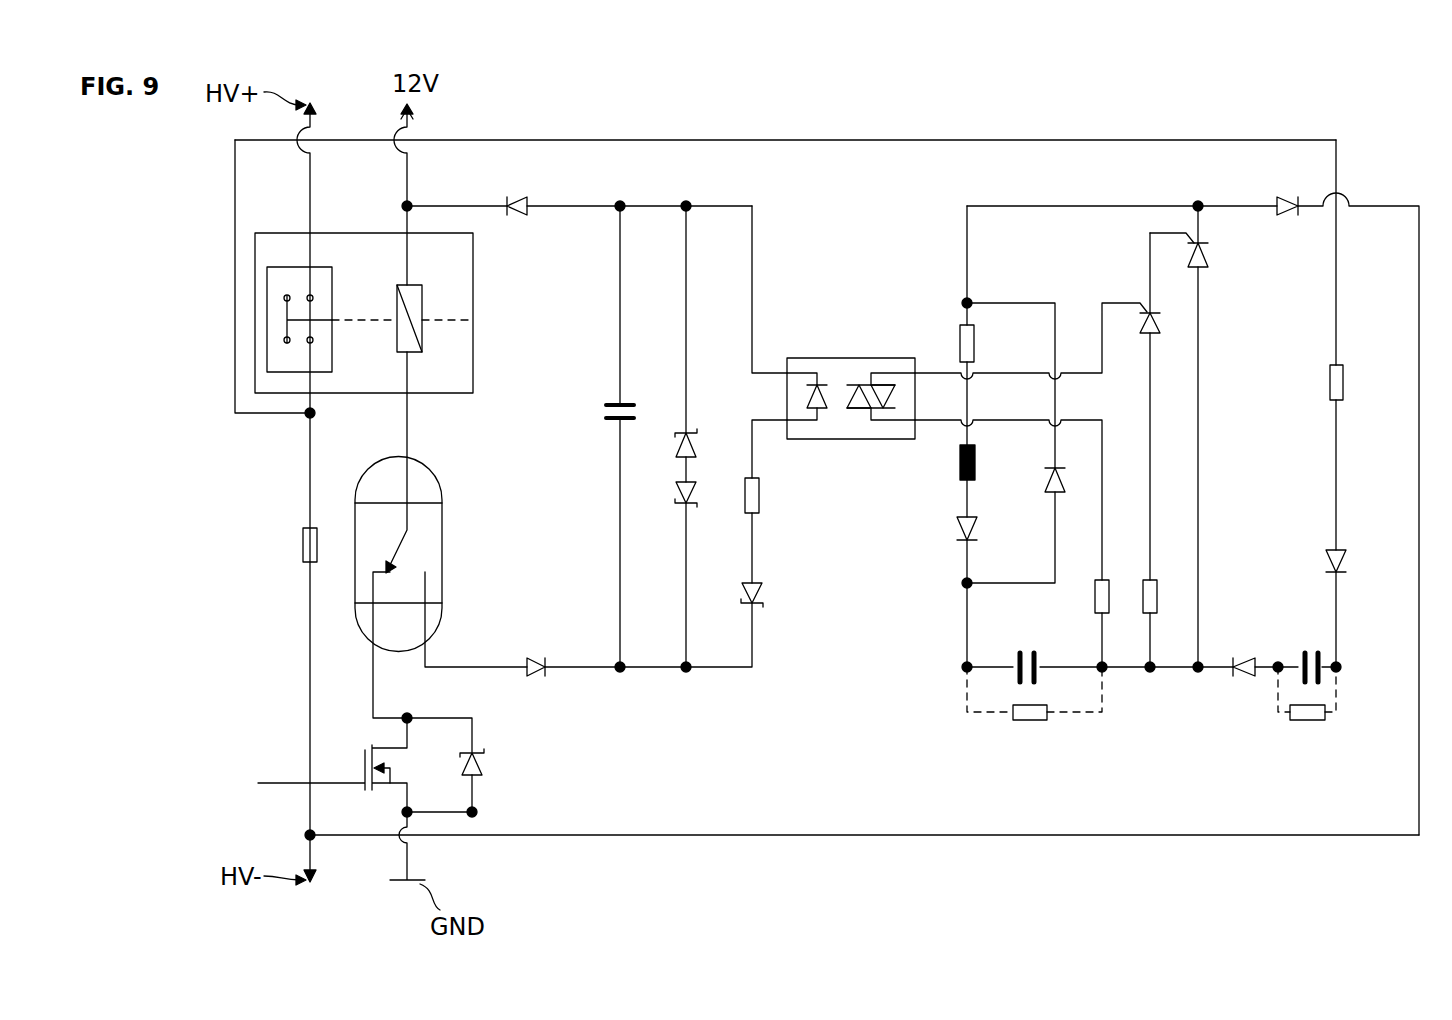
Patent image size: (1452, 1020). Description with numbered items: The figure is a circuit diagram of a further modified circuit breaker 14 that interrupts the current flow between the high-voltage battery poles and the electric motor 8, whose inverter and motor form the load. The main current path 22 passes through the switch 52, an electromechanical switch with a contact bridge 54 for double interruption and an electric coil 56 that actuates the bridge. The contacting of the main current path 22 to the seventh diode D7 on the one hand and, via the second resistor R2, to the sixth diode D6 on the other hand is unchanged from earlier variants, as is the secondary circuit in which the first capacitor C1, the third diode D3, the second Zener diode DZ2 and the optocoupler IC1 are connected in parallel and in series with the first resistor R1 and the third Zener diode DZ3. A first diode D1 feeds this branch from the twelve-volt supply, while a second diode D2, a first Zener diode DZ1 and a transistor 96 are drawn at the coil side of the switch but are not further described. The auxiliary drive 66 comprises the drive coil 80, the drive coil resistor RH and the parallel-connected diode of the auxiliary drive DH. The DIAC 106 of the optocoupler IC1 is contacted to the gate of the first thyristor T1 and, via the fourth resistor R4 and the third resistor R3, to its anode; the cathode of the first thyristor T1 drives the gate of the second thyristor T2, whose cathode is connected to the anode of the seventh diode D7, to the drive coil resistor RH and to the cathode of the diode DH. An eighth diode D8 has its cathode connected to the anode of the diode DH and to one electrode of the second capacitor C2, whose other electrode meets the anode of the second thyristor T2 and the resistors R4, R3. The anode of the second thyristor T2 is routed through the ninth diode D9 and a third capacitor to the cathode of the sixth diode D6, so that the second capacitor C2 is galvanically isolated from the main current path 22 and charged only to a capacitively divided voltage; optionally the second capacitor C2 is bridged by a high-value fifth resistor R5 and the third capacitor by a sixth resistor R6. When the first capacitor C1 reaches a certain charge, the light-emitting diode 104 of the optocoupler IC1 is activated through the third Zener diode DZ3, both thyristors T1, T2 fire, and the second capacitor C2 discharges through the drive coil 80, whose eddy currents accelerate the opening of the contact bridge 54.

The circuit breaker 14 is at (1385, 150).
The main current path 22 is at (308, 176).
The switch 52 is at (345, 313).
The contact bridge 54 is at (286, 325).
The electric coil 56 is at (422, 330).
The electric motor 8 is at (204, 542).
The switching transistor 96 is at (355, 797).
The auxiliary drive 66 is at (968, 436).
The drive coil 80 is at (976, 462).
The light-emitting diode 104 is at (827, 410).
The DIAC 106 is at (850, 384).
The optocoupler IC1 is at (851, 392).
The diode D1 is at (518, 200).
The diode D2 is at (540, 659).
The third diode D3 is at (696, 452).
The sixth diode D6 is at (1346, 562).
The seventh diode D7 is at (1287, 200).
The eighth diode D8 is at (960, 530).
The ninth diode D9 is at (1248, 678).
The diode of auxiliary drive DH is at (1047, 492).
The zener diode DZ1 is at (483, 766).
The second Zener diode DZ2 is at (692, 498).
The third Zener diode DZ3 is at (763, 590).
The first capacitor C1 is at (611, 422).
The second capacitor C2 is at (1020, 655).
The first resistor R1 is at (760, 497).
The second resistor R2 is at (1344, 386).
The third resistor R3 is at (1157, 592).
The fourth resistor R4 is at (1095, 592).
The fifth resistor R5 is at (1030, 721).
The sixth resistor R6 is at (1308, 721).
The drive coil resistor RH is at (975, 347).
The first thyristor T1 is at (1160, 322).
The second thyristor T2 is at (1208, 251).